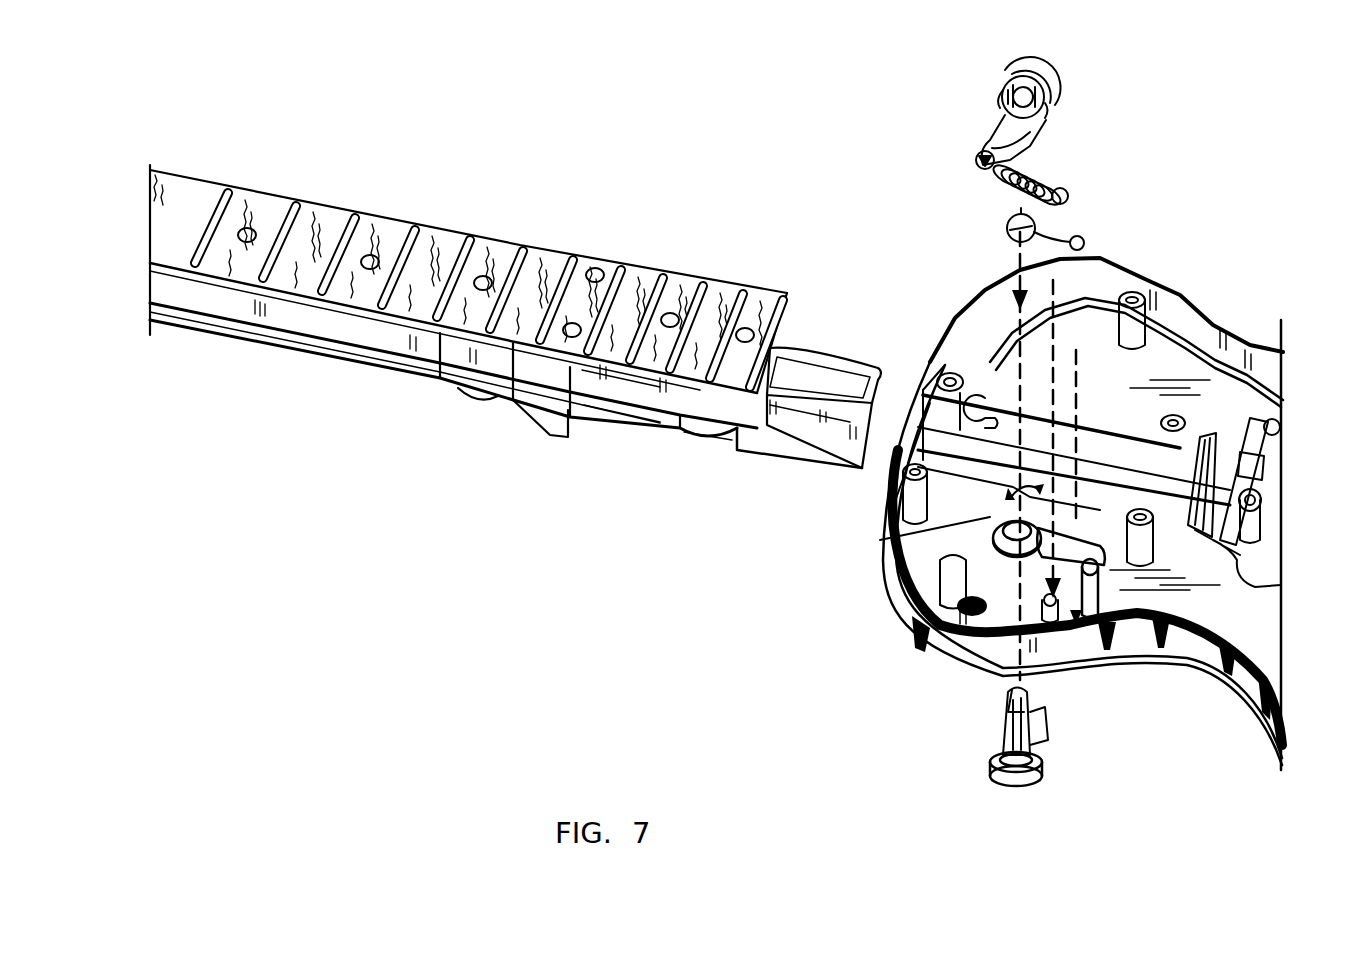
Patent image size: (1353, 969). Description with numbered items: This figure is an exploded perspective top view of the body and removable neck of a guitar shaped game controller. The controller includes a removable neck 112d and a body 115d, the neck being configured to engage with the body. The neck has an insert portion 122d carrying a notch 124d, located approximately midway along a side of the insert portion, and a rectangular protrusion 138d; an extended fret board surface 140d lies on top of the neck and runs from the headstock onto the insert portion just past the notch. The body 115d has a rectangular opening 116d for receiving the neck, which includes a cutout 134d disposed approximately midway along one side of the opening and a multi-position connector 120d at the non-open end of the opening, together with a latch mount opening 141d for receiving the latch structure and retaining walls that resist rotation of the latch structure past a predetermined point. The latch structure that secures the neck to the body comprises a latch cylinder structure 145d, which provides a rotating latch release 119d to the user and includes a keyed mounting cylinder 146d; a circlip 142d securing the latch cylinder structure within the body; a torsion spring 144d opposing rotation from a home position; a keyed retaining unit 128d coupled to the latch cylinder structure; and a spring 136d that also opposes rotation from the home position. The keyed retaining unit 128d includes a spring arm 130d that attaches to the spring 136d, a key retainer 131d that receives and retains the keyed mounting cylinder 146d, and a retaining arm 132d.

The removable neck 112d is at (242, 190).
The insert portion 122d is at (833, 340).
The extended fret board surface 140d is at (606, 378).
The rectangular protrusion 138d is at (654, 436).
The notch 124d is at (713, 445).
The body 115d is at (1210, 313).
The rectangular opening 116d is at (893, 437).
The circlip 142d is at (980, 380).
The multi-position connector 120d is at (1196, 437).
The cutout 134d is at (993, 523).
The latch mount opening 141d is at (935, 645).
The keyed retaining unit 128d is at (1050, 133).
The key retainer 131d is at (1005, 90).
The retaining arm 132d is at (1053, 87).
The spring arm 130d is at (975, 160).
The spring 136d is at (1003, 193).
The torsion spring 144d is at (1006, 230).
The latch release 119d is at (1043, 735).
The keyed mounting cylinder 146d is at (1003, 720).
The latch cylinder structure 145d is at (992, 781).